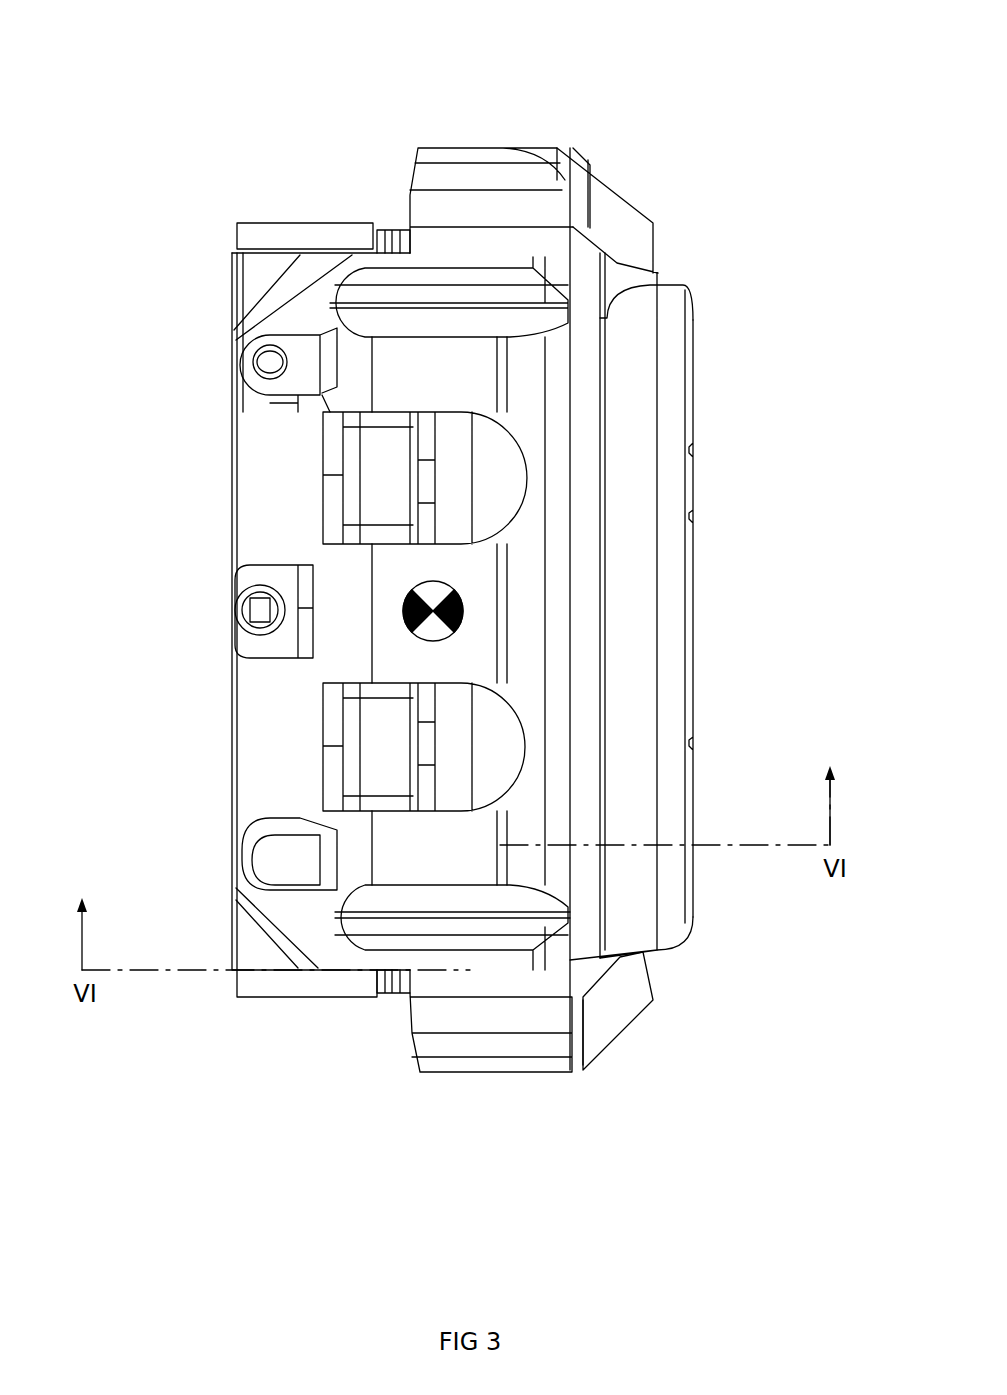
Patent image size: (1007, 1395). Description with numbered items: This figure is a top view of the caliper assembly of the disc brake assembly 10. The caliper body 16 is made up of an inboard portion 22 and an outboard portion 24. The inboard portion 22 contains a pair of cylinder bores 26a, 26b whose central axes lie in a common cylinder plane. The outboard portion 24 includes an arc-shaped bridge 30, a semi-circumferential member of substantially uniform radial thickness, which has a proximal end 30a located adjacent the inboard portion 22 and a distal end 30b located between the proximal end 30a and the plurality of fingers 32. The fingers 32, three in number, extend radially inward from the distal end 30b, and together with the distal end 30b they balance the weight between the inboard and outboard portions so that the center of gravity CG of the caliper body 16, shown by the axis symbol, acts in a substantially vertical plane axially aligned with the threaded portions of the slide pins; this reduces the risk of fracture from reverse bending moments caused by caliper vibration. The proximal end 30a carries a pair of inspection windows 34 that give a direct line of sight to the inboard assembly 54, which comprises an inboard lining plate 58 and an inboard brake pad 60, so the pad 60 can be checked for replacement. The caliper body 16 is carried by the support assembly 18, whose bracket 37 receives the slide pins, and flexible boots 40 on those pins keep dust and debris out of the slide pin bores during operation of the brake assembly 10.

The brake assembly 10 is at (310, 78).
The caliper body 16 is at (236, 222).
The support assembly 18 is at (650, 215).
The inboard portion 22 is at (278, 293).
The outboard portion 24 is at (627, 372).
The cylinder bore 26a is at (268, 465).
The cylinder bore 26b is at (268, 760).
The bridge 30 is at (455, 372).
The proximal end 30a is at (393, 368).
The distal end 30b is at (593, 400).
The fingers 32 is at (690, 350).
The inspection windows 34 is at (507, 473).
The bracket 37 is at (613, 1007).
The flexible boots 40 is at (388, 232).
The inboard assembly 54 is at (452, 705).
The inboard lining plate 58 is at (430, 527).
The inboard brake pad 60 is at (458, 462).
The center of gravity CG is at (433, 641).